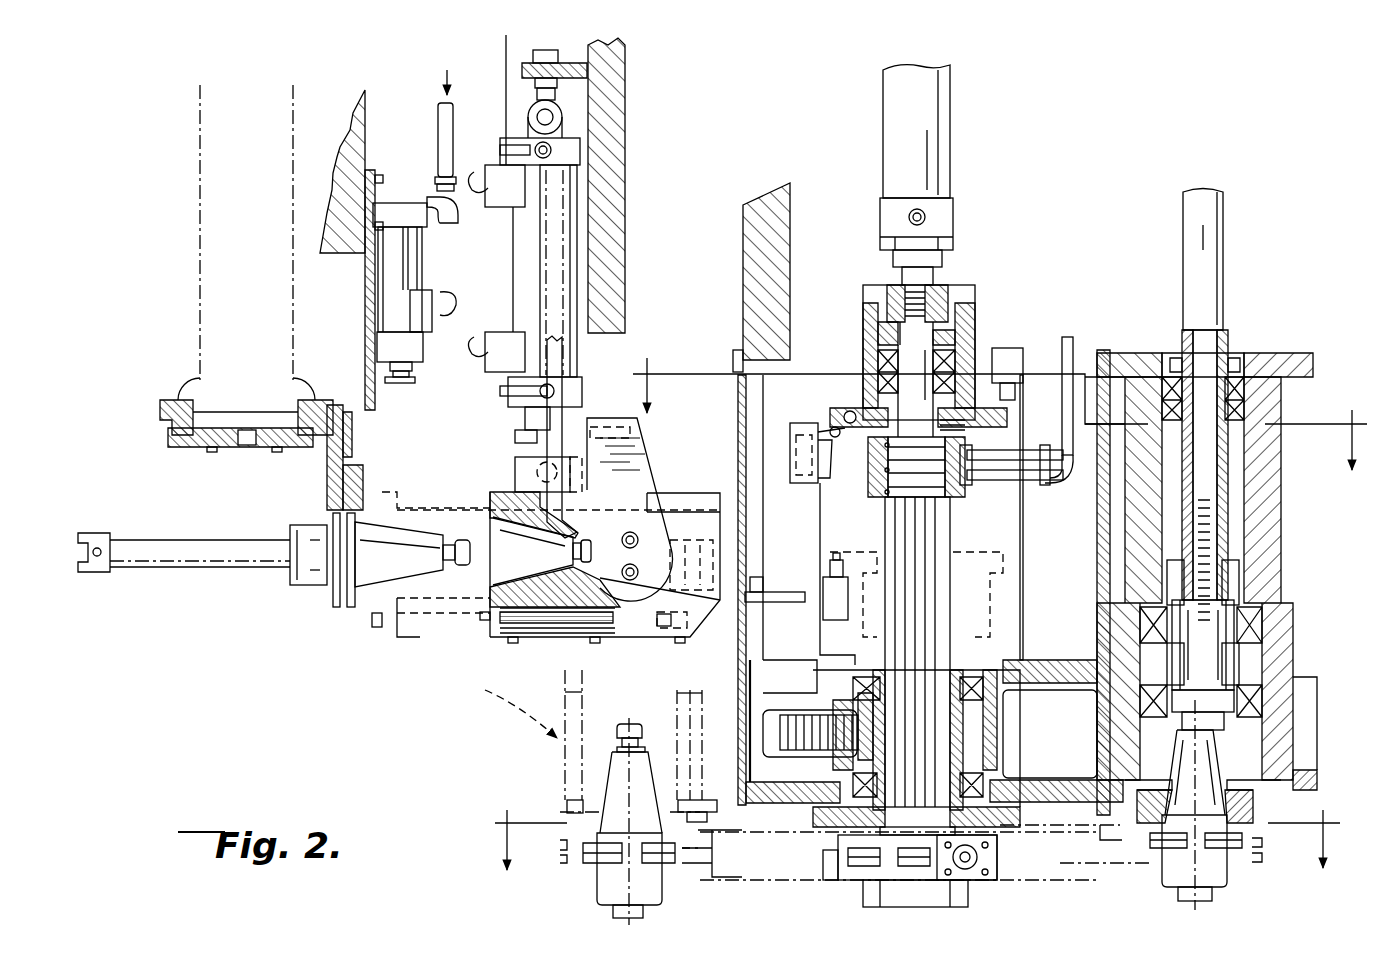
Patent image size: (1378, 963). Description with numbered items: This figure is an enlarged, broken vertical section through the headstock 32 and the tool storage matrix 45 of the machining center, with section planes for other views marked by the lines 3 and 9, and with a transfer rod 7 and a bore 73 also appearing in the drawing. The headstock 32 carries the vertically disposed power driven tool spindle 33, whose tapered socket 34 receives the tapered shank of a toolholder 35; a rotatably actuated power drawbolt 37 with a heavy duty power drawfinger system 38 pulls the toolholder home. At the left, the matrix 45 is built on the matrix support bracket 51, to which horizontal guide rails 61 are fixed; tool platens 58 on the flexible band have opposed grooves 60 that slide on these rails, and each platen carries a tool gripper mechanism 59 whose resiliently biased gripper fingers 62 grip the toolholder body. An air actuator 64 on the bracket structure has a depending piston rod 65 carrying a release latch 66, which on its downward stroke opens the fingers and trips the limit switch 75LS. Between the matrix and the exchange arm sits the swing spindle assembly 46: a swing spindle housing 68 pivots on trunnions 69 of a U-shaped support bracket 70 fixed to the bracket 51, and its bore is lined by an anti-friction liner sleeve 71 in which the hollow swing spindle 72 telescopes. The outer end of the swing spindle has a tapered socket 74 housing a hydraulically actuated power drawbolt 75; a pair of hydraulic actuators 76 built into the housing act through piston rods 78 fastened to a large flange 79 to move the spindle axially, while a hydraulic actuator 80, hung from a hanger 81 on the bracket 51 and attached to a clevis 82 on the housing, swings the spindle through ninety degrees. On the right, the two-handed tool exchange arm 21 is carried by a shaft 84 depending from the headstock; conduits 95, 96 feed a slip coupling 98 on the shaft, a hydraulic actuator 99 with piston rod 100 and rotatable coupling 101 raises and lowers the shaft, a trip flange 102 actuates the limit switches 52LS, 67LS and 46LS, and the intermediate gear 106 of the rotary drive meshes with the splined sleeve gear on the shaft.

The transfer rod 7 is at (178, 568).
The tool exchange arm 21 is at (848, 880).
The headstock 32 is at (1045, 807).
The tool spindle 33 is at (1230, 670).
The tapered socket 34 is at (1100, 758).
The toolholder 35 is at (298, 582).
The power drawbolt 37 is at (1210, 722).
The power drawfinger system 38 is at (1225, 712).
The tool storage matrix 45 is at (195, 252).
The swing spindle assembly 46 is at (482, 635).
The limit switch 46LS is at (828, 606).
The matrix support bracket 51 is at (625, 168).
The limit switch 52LS is at (1008, 347).
The tool platen 58 is at (172, 449).
The tool gripper mechanism 59 is at (330, 462).
The grooves 60 is at (300, 412).
The guide rails 61 is at (186, 396).
The gripper fingers 62 is at (318, 555).
The air actuator 64 is at (388, 275).
The piston rod 65 is at (412, 368).
The release latch 66 is at (385, 412).
The limit switch 67LS is at (805, 423).
The swing spindle housing 68 is at (688, 492).
The trunnions 69 is at (620, 545).
The support bracket 70 is at (643, 452).
The anti-friction liner sleeve 71 is at (520, 490).
The swing spindle 72 is at (490, 594).
The bore 73 is at (492, 506).
The tapered socket 74 is at (497, 547).
The power drawbolt 75 is at (643, 630).
The limit switch 75LS is at (468, 283).
The hydraulic actuators 76 is at (552, 633).
The piston rods 78 is at (600, 633).
The flange 79 is at (573, 797).
The hydraulic actuator 80 is at (517, 232).
The hanger 81 is at (565, 62).
The clevis 82 is at (522, 458).
The shaft 84 is at (950, 527).
The conduit 95 is at (1033, 480).
The conduit 96 is at (998, 478).
The slip coupling 98 is at (875, 500).
The hydraulic actuator 99 is at (950, 158).
The piston rod 100 is at (948, 280).
The rotatable coupling 101 is at (977, 325).
The trip flange 102 is at (977, 423).
The intermediate gear 106 is at (798, 722).
The section line 3- 3 is at (1000, 401).
The section line 9- 9 is at (928, 824).